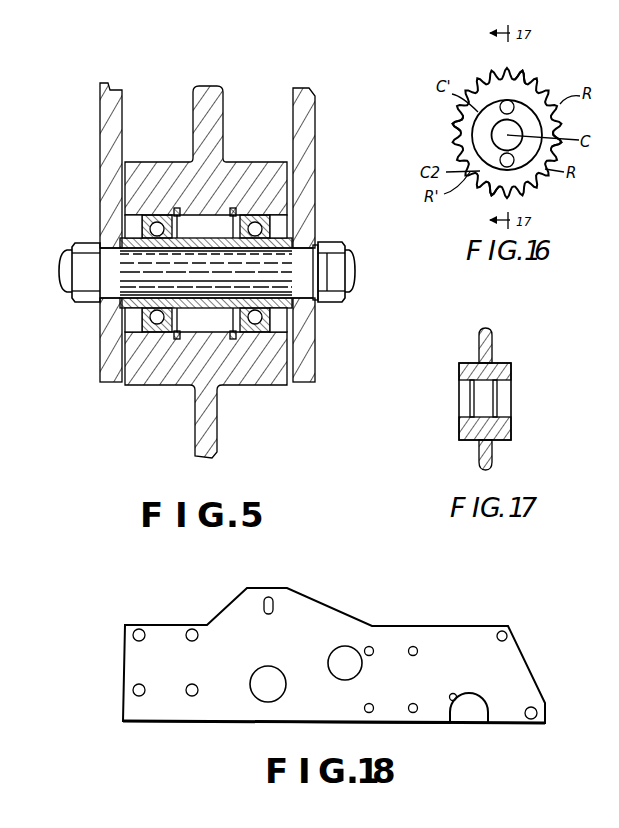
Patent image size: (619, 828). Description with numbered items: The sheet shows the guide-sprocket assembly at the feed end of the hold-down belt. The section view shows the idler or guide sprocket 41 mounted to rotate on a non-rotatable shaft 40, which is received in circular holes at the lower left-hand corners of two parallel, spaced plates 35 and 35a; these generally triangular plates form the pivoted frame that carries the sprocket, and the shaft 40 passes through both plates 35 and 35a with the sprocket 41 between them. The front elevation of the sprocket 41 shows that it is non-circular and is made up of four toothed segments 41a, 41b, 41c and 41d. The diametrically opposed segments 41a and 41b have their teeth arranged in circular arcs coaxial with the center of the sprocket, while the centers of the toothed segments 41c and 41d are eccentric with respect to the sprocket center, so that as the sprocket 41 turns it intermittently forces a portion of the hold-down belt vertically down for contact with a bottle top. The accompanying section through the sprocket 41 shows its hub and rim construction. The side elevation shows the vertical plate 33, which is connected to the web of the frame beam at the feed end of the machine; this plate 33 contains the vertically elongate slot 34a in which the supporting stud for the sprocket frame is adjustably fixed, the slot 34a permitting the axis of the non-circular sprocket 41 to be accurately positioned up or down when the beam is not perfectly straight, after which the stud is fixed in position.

In FIG. 5, the idler or guide sprocket 41 is at (240, 102).
In FIG. 16, the idler or guide sprocket 41 is at (555, 97).
In FIG. 17, the idler or guide sprocket 41 is at (522, 378).
In FIG. 5, the plate 35 is at (307, 149).
In FIG. 5, the plate 35a is at (118, 178).
In FIG. 5, the non-rotatable shaft 40 is at (346, 303).
In FIG. 16, the toothed segment 41a is at (453, 125).
In FIG. 16, the toothed segment 41b is at (563, 134).
In FIG. 16, the toothed segment 41c is at (522, 70).
In FIG. 16, the toothed segment 41d is at (489, 197).
In FIG. 18, the vertically elongate slot 34a is at (269, 598).
In FIG. 18, the vertical plate 33 is at (334, 643).